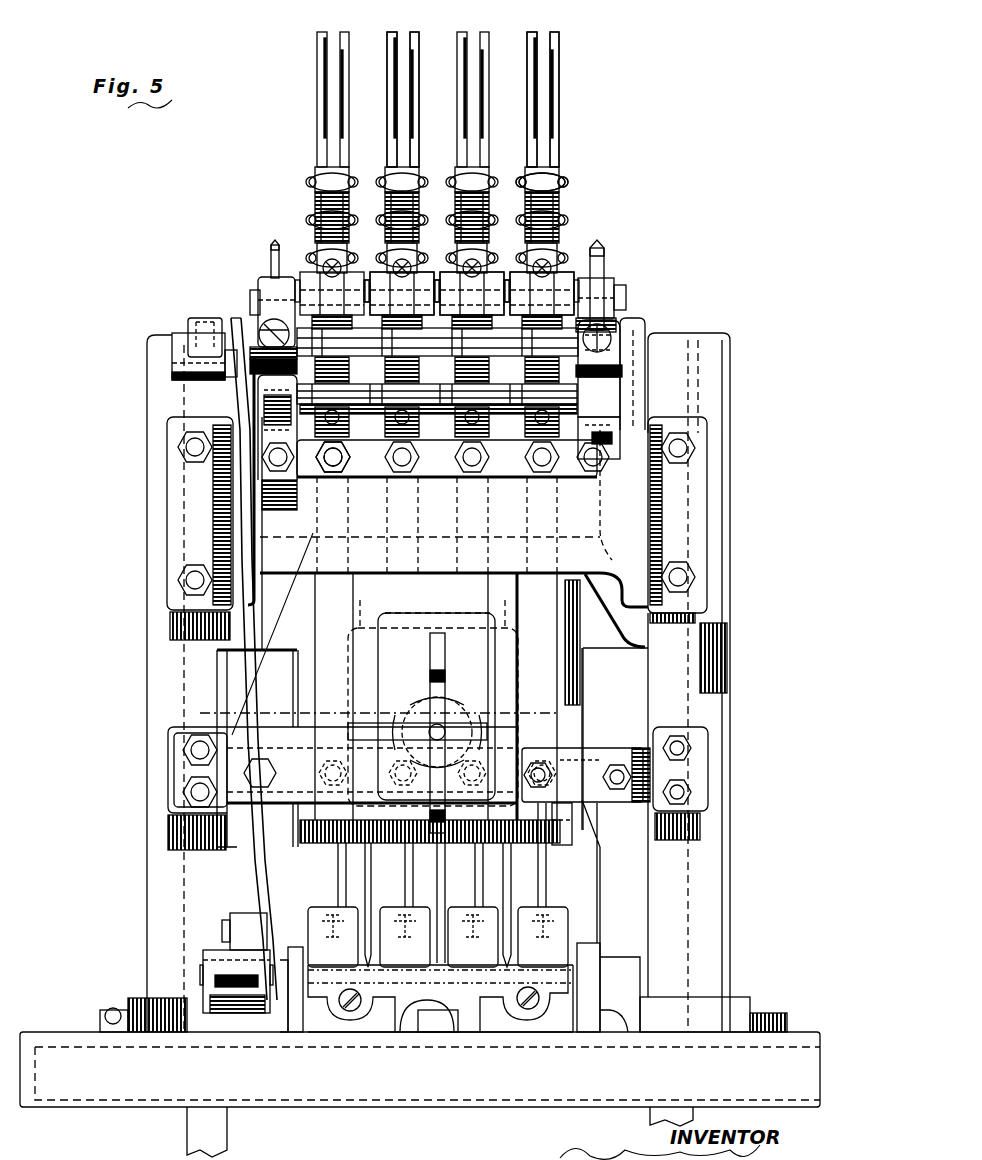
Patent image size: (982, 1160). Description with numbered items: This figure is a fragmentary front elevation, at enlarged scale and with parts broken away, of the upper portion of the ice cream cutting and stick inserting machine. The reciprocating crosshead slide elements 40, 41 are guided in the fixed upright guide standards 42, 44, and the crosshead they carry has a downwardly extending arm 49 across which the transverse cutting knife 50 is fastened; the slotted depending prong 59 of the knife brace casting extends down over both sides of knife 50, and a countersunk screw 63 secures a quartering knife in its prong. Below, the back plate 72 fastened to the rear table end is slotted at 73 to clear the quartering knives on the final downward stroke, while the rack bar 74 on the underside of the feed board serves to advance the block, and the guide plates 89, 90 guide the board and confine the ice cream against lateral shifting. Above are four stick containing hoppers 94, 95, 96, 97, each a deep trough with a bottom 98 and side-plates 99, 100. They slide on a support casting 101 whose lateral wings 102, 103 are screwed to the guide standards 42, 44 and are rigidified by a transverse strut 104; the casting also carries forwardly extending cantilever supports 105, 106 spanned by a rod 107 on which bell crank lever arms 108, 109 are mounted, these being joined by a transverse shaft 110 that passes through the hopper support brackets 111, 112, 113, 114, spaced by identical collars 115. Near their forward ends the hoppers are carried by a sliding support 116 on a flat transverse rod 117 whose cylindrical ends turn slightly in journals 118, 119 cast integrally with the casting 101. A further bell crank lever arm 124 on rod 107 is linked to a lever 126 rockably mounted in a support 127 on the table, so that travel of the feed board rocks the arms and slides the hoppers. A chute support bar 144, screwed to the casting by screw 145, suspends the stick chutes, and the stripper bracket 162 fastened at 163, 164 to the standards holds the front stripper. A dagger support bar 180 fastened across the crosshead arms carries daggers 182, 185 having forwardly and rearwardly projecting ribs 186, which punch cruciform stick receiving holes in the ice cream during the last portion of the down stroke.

The reciprocatory crosshead slide element 40 is at (712, 627).
The reciprocatory crosshead slide element 41 is at (177, 638).
The upright guide standard 42 is at (717, 650).
The upright guide standard 44 is at (158, 388).
The downwardly extending arm 49 is at (237, 847).
The transverse cutting knife 50 is at (635, 857).
The depending prong 59 is at (503, 733).
The countersunk screw 63 is at (558, 832).
The back plate 72 is at (405, 970).
The slot 73 is at (445, 953).
The rack bar 74 is at (443, 1017).
The guide plate 89 is at (583, 990).
The guide plate 90 is at (293, 1000).
The stick containing hopper 94 is at (560, 131).
The stick containing hopper 95 is at (485, 131).
The stick containing hopper 96 is at (415, 131).
The stick containing hopper 97 is at (347, 128).
The hopper bottom 98 is at (547, 181).
The hopper side-plate 99 is at (418, 43).
The hopper side-plate 100 is at (391, 38).
The support casting 101 is at (600, 538).
The lateral wing 102 is at (700, 464).
The lateral wing 103 is at (176, 526).
The transverse strut 104 is at (445, 487).
The cantilever support 105 is at (630, 370).
The cantilever support 106 is at (246, 367).
The rod 107 is at (647, 330).
The bell crank lever arm 108 is at (618, 284).
The bell crank lever arm 109 is at (268, 283).
The transverse shaft 110 is at (252, 300).
The hopper support bracket 111 is at (548, 280).
The hopper support bracket 112 is at (478, 290).
The hopper support bracket 113 is at (410, 290).
The hopper support bracket 114 is at (323, 282).
The collar 115 is at (604, 262).
The sliding support 116 is at (438, 450).
The flat transverse rod 117 is at (621, 397).
The journal 118 is at (604, 415).
The journal 119 is at (260, 420).
The bell crank lever arm 124 is at (200, 344).
The lever 126 is at (222, 950).
The support 127 is at (205, 958).
The chute support bar 144 is at (370, 482).
The screw 145 is at (285, 497).
The stripper bracket 162 is at (233, 732).
The fastening 163 is at (690, 787).
The fastening 164 is at (186, 795).
The dagger support bar 180 is at (648, 718).
The dagger 182 is at (535, 910).
The dagger 185 is at (328, 910).
The ribs 186 is at (545, 885).